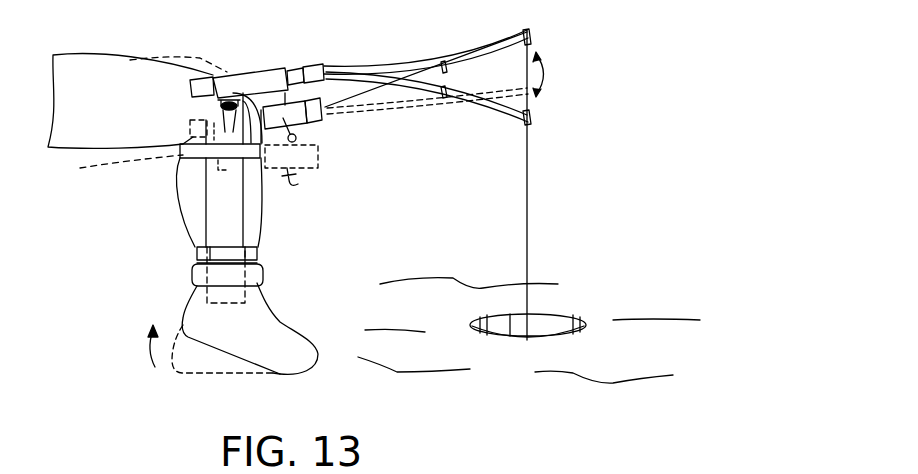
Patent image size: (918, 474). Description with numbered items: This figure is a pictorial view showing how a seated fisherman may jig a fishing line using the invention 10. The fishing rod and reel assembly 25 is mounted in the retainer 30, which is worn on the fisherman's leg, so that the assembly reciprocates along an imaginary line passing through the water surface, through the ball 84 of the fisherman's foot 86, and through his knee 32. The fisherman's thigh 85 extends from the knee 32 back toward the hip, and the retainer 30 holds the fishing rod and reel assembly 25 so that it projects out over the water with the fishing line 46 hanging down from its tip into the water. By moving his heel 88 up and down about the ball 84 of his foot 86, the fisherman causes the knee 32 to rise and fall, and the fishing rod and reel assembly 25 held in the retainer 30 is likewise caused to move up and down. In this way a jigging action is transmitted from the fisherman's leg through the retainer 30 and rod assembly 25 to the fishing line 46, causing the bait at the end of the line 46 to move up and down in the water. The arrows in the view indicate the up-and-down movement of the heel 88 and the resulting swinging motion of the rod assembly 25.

The housing 10 is at (217, 210).
The fishing rod and reel assembly 25 is at (423, 60).
The retainer 30 is at (262, 72).
The knee 32 is at (200, 74).
The fishing line 46 is at (528, 227).
The ball of the fisherman's foot 84 is at (285, 373).
The thigh 85 is at (102, 133).
The fisherman's foot 86 is at (273, 320).
The heel 88 is at (180, 363).